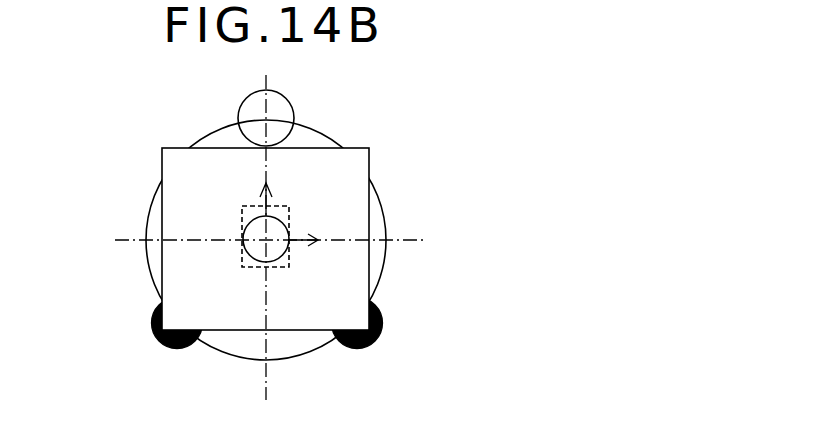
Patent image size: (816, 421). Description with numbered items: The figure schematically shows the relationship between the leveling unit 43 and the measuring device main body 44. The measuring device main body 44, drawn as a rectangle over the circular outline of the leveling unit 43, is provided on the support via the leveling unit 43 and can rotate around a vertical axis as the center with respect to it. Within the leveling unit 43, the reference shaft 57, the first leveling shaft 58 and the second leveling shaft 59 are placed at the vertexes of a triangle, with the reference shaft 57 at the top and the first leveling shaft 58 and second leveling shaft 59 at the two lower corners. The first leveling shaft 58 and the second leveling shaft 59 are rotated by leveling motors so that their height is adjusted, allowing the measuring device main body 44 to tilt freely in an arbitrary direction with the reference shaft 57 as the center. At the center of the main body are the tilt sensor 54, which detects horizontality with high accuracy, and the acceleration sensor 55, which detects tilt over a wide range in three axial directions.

The leveling unit 43 is at (385, 256).
The measuring device main body 44 is at (290, 332).
The tilt sensor 54 is at (243, 260).
The acceleration sensor 55 is at (242, 224).
The reference shaft 57 is at (293, 103).
The first leveling shaft 58 is at (180, 348).
The second leveling shaft 59 is at (383, 315).